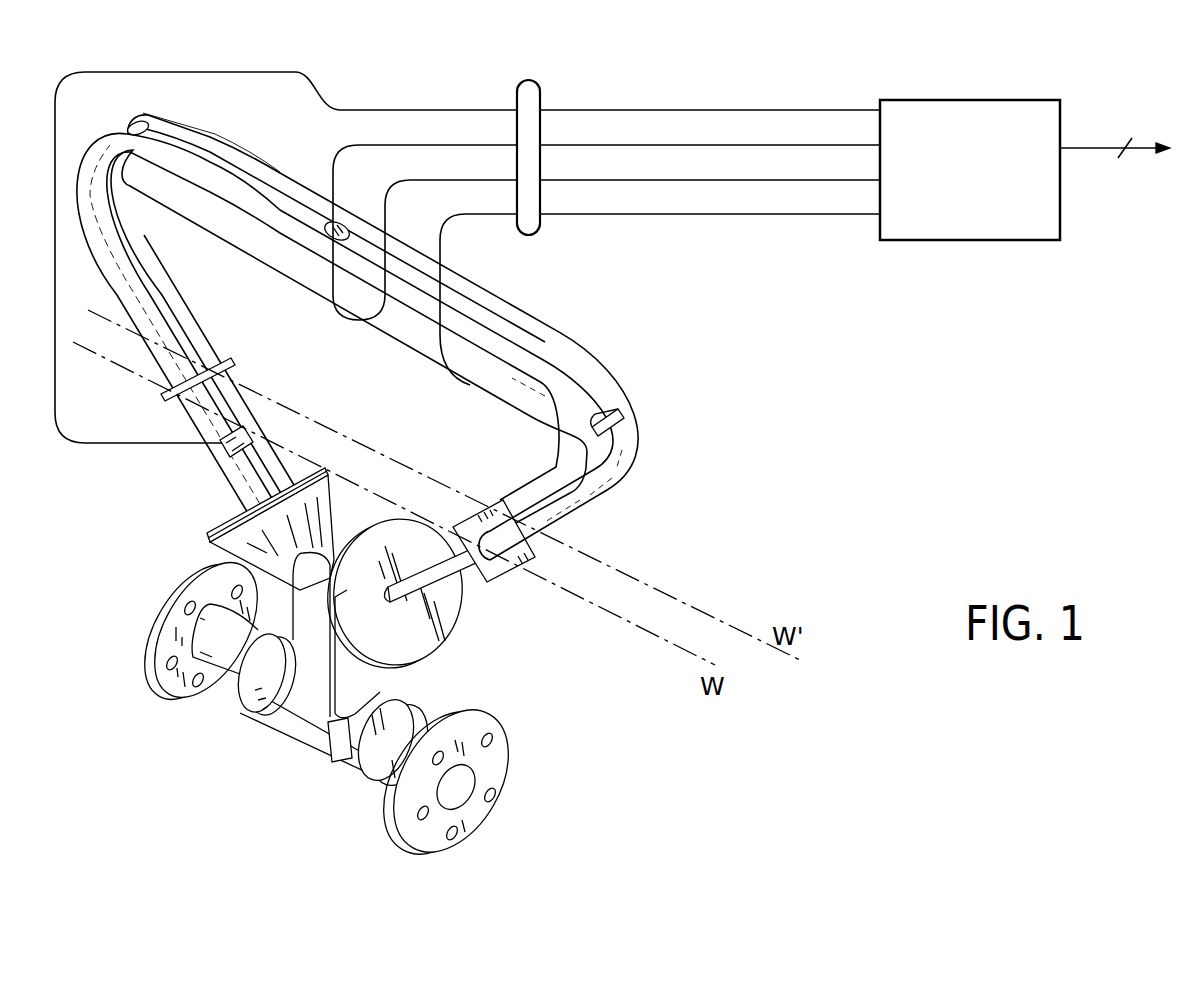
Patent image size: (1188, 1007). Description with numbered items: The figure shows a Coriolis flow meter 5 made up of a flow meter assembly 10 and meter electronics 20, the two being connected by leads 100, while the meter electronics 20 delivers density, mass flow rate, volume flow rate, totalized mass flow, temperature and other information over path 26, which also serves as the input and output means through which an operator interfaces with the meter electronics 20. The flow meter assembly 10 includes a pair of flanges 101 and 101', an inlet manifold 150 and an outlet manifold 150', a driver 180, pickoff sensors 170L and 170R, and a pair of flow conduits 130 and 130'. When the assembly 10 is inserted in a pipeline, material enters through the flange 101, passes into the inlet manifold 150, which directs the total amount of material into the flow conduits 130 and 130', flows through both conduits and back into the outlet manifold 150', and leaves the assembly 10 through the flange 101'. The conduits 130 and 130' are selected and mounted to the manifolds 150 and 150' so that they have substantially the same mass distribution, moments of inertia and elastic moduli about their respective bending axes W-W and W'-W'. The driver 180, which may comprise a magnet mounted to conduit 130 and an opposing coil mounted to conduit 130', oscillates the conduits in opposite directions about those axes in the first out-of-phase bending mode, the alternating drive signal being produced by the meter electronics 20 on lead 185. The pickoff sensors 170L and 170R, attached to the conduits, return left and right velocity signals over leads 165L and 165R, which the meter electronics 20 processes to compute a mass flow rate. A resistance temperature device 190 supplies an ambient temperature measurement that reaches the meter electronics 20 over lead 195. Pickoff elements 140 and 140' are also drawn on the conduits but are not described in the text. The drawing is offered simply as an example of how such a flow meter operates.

The Coriolis flow meter 5 is at (991, 356).
The flow meter assembly 10 is at (548, 598).
The meter electronics 20 is at (908, 242).
The path 26 is at (1105, 150).
The leads 100 is at (517, 92).
The flange 101 is at (173, 620).
The flange 101' is at (470, 782).
The flow conduit 130 is at (347, 337).
The flow conduit 130' is at (357, 336).
The pickoff sensor 140 is at (168, 392).
The pickoff sensor 140' is at (440, 588).
The inlet manifold 150 is at (295, 624).
The outlet manifold 150' is at (410, 691).
The lead 165L is at (840, 182).
The lead 165R is at (790, 216).
The pickoff sensor 170L is at (136, 122).
The pickoff sensor 170R is at (612, 406).
The driver 180 is at (327, 224).
The lead 185 is at (848, 146).
The resistance temperature device (RTD) 190 is at (245, 433).
The lead 195 is at (778, 110).